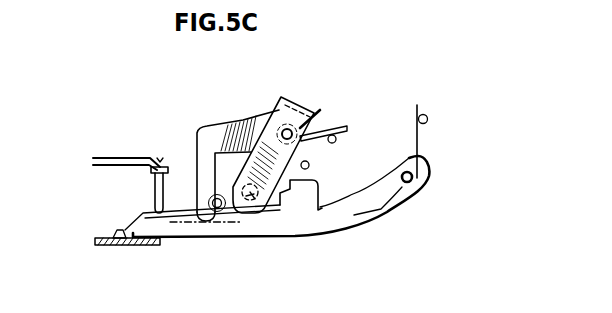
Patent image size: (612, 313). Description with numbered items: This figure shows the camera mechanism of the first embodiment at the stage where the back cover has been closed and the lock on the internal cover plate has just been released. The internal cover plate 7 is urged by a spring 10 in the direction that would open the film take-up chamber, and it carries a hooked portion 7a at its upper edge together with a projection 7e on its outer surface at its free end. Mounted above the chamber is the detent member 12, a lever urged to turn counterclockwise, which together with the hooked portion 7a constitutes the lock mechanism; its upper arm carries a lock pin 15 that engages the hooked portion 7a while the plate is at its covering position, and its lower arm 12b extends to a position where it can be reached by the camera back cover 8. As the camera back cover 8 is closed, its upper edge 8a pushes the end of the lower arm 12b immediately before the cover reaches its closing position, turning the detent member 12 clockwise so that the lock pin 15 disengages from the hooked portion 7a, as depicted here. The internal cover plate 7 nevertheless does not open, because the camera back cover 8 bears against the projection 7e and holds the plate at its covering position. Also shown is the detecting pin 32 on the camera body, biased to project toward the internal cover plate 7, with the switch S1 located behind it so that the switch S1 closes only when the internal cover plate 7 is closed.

The internal cover plate 7 is at (351, 223).
The hooked portion 7a is at (302, 190).
The projection 7e is at (118, 232).
The camera back cover 8 is at (111, 246).
The upper edge of camera back cover 8a is at (228, 223).
The spring 10 is at (417, 131).
The detent member 12 is at (231, 120).
The lower arm 12b is at (203, 168).
The lock pin 15 is at (261, 214).
The detecting pin 32 is at (155, 183).
The switch S1 is at (113, 157).